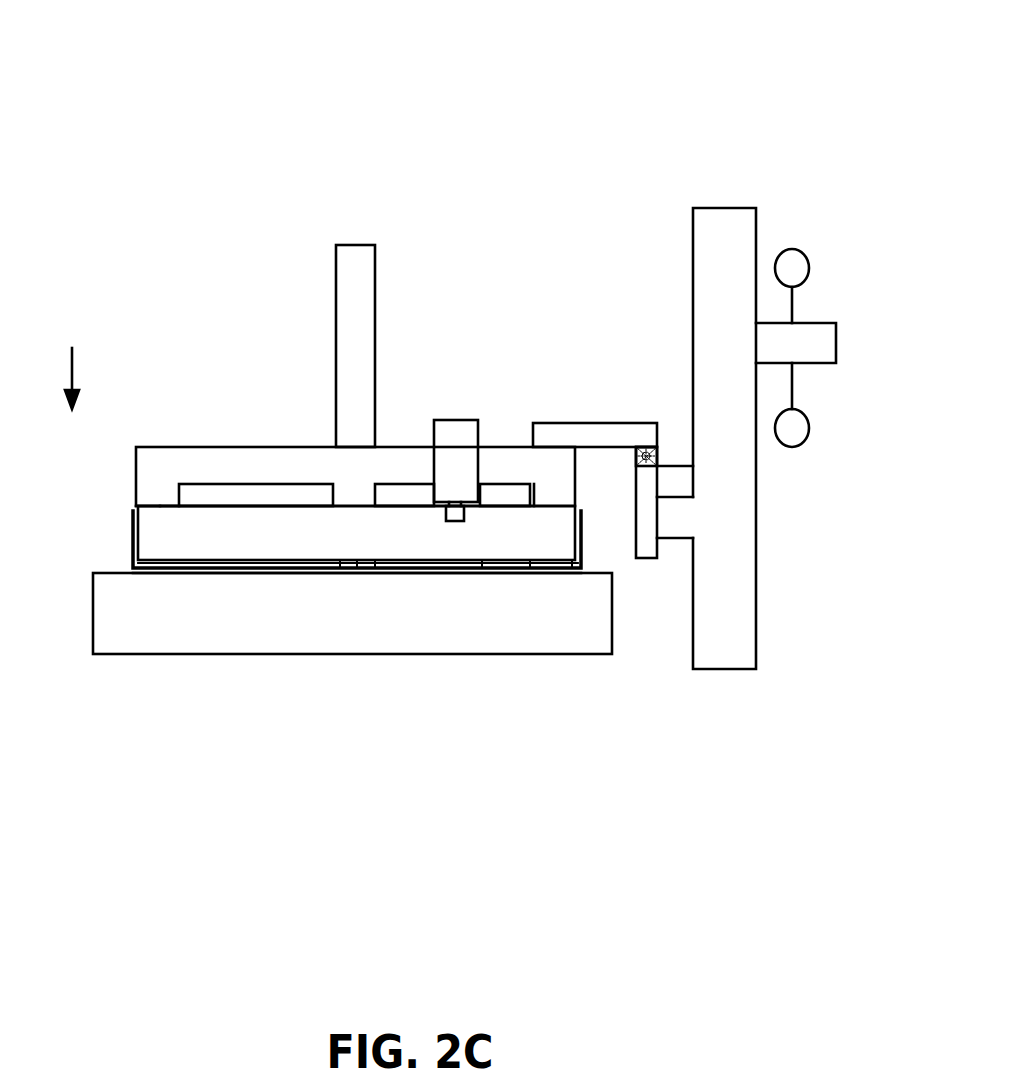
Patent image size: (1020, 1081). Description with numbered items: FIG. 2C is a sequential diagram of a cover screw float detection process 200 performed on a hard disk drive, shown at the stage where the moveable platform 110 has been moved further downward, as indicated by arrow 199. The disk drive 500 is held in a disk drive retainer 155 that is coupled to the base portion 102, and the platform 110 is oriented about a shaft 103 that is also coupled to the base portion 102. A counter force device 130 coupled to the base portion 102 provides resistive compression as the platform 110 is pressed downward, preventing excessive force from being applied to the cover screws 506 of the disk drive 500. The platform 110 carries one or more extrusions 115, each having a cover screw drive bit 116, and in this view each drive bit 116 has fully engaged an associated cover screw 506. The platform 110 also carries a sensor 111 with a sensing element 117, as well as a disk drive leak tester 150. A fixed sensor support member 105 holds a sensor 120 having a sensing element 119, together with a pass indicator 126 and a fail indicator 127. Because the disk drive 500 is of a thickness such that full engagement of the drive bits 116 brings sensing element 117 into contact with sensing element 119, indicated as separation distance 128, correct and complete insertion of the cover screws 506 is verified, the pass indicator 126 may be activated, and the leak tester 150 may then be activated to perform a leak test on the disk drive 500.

The cover screw float detection process 200 is at (160, 41).
The arrow 199 is at (72, 383).
The fixed sensor support member 105 is at (733, 619).
The pass indicator 126 is at (797, 265).
The fail indicator 127 is at (797, 428).
The moveable platform 110 is at (315, 460).
The extrusion 115 is at (145, 497).
The cover screw drive bit 116 is at (163, 502).
The disk drive leak tester 150 is at (460, 420).
The sensor 111 is at (562, 433).
The sensing element 117 is at (645, 447).
The separation distance 128 is at (657, 455).
The sensing element 119 is at (657, 466).
The sensor 120 is at (648, 526).
The cover screw 506 is at (147, 533).
The disk drive 500 is at (128, 550).
The shaft 103 is at (357, 562).
The counter force device 130 is at (517, 568).
The base portion 102 is at (150, 652).
The disk drive retainer 155 is at (452, 573).